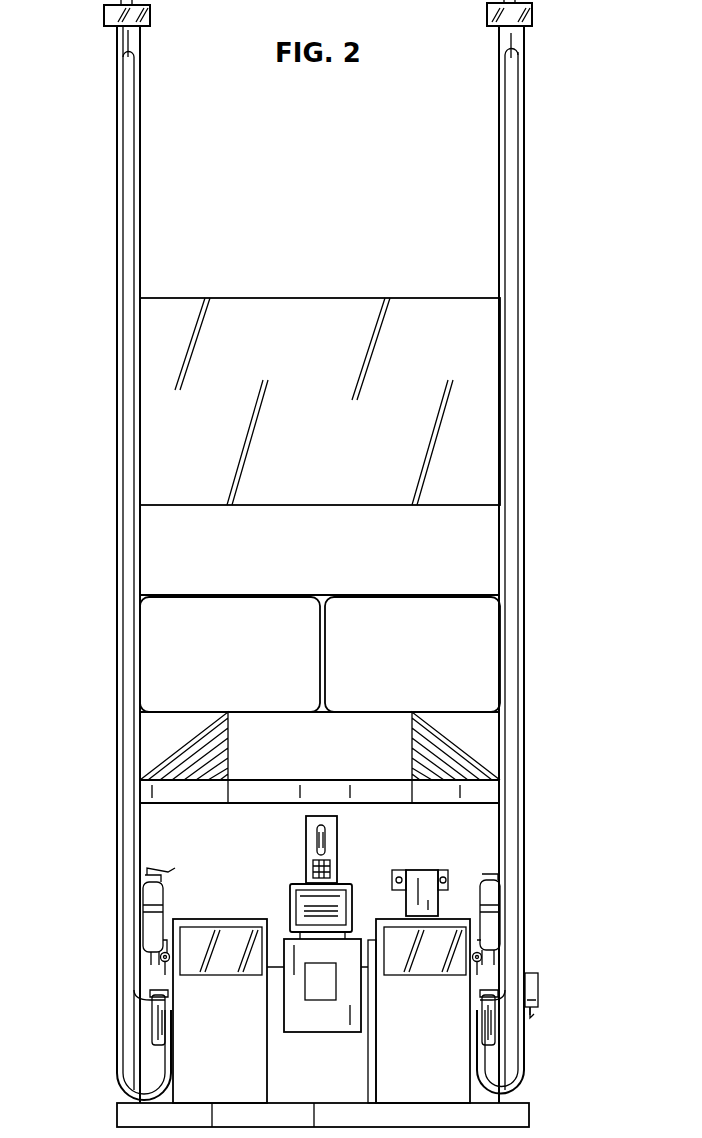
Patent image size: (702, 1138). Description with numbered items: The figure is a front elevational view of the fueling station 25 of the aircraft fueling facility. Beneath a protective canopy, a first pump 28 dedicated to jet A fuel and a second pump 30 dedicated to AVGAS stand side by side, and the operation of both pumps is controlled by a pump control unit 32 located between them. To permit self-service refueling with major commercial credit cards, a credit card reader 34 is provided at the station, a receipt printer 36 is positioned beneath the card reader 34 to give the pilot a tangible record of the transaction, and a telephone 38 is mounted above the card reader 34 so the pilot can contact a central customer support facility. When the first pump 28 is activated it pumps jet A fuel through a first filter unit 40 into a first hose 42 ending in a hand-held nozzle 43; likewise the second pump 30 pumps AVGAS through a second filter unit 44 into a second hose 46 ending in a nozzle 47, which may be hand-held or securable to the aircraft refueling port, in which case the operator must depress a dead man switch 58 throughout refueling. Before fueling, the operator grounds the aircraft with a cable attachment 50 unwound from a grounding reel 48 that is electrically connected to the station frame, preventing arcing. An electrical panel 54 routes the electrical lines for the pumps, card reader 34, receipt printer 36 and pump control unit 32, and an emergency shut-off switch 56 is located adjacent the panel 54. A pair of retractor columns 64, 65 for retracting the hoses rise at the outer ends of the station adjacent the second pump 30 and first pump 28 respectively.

The fueling station 25 is at (533, 722).
The first pump 28 is at (228, 1072).
The second pump 30 is at (438, 1072).
The pump control unit 32 is at (368, 1045).
The credit card reader 34 is at (290, 905).
The receipt printer 36 is at (332, 1032).
The telephone 38 is at (306, 848).
The first filter unit 40 is at (153, 1018).
The first hose 42 is at (117, 442).
The nozzle 43 is at (163, 958).
The second filter unit 44 is at (492, 1035).
The second hose 46 is at (525, 422).
The nozzle 47 is at (482, 958).
The grounding reel 48 is at (538, 978).
The cable attachment 50 is at (532, 1015).
The electrical panel 54 is at (440, 903).
The emergency shut-off switch 56 is at (398, 872).
The dead man switch 58 is at (445, 870).
The retractor column 64 is at (525, 172).
The retractor column 65 is at (117, 175).